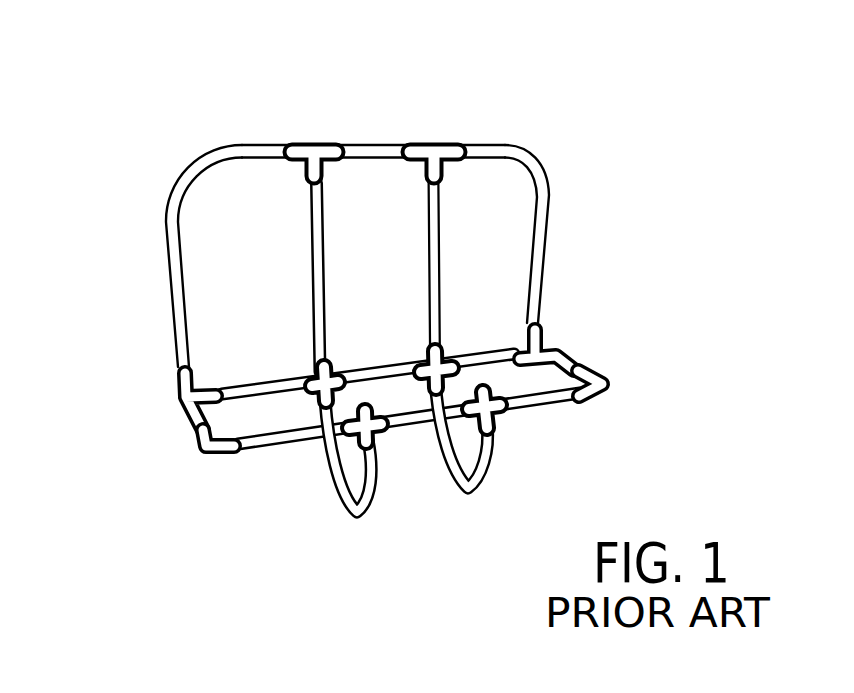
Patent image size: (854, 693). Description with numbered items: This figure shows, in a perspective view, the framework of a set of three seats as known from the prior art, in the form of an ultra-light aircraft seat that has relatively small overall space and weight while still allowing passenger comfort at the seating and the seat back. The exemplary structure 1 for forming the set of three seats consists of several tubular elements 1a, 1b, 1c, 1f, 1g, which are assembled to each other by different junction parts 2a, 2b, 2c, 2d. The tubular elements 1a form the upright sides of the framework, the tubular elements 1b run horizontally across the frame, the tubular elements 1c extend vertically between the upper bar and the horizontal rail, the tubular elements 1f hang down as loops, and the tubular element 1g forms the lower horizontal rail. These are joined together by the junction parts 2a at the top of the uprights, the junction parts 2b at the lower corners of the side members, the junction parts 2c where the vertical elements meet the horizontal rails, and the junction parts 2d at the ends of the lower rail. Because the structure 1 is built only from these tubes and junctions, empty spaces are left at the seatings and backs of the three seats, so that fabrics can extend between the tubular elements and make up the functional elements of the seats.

The structure 1 is at (146, 196).
The tubular element 1a is at (177, 313).
The tubular element 1b is at (367, 147).
The tubular element 1c is at (312, 272).
The tubular element 1f is at (342, 514).
The tubular element 1g is at (297, 437).
The junction part 2a is at (305, 147).
The junction part 2b is at (190, 404).
The junction part 2c is at (305, 363).
The junction part 2d is at (207, 455).